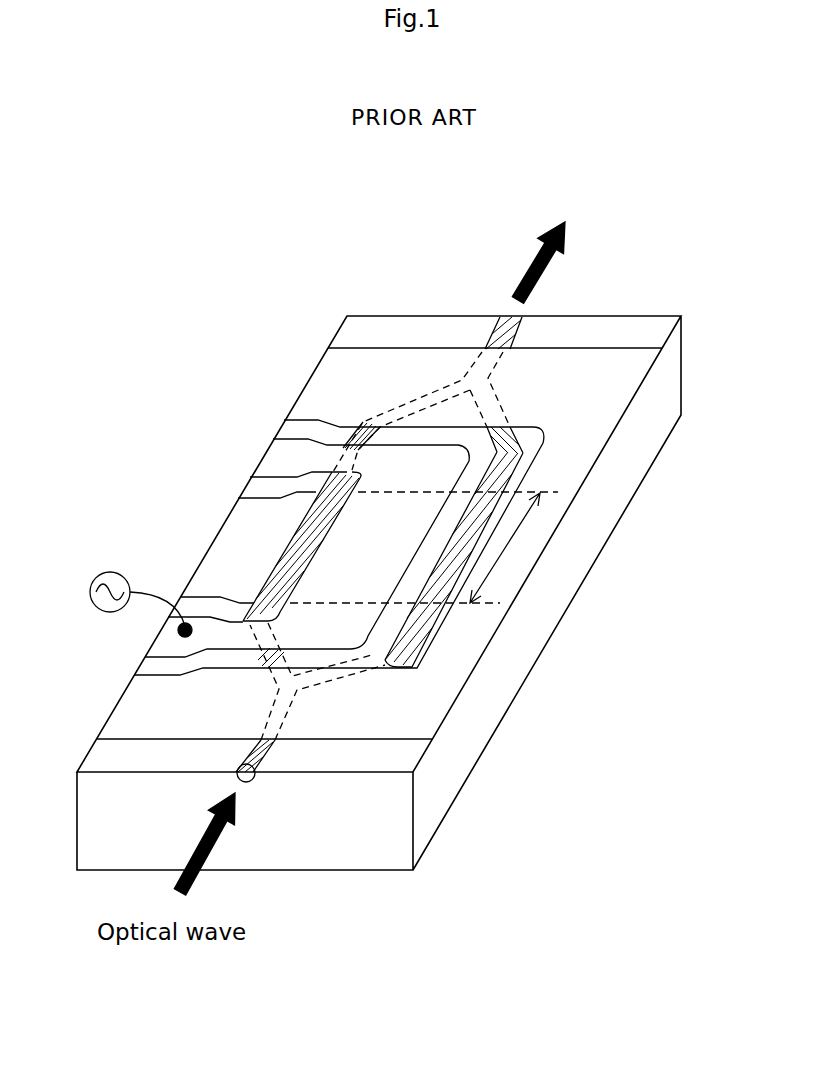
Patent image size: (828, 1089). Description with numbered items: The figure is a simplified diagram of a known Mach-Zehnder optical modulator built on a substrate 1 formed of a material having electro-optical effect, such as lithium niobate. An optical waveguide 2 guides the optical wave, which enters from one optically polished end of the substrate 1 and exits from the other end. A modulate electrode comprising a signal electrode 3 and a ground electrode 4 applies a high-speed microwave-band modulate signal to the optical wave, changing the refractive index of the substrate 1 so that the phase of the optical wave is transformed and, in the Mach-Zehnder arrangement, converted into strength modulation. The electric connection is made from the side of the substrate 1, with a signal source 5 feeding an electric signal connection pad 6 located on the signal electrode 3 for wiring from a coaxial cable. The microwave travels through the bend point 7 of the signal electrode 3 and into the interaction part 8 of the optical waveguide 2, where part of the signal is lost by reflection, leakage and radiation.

The substrate 1 is at (606, 497).
The optical waveguide 2 is at (262, 772).
The signal electrode 3 is at (397, 527).
The ground electrode 4 is at (247, 527).
The signal source 5 is at (141, 586).
The electric signal connection pad 6 is at (170, 647).
The bend point 7 is at (330, 625).
The interaction part 8 is at (424, 547).